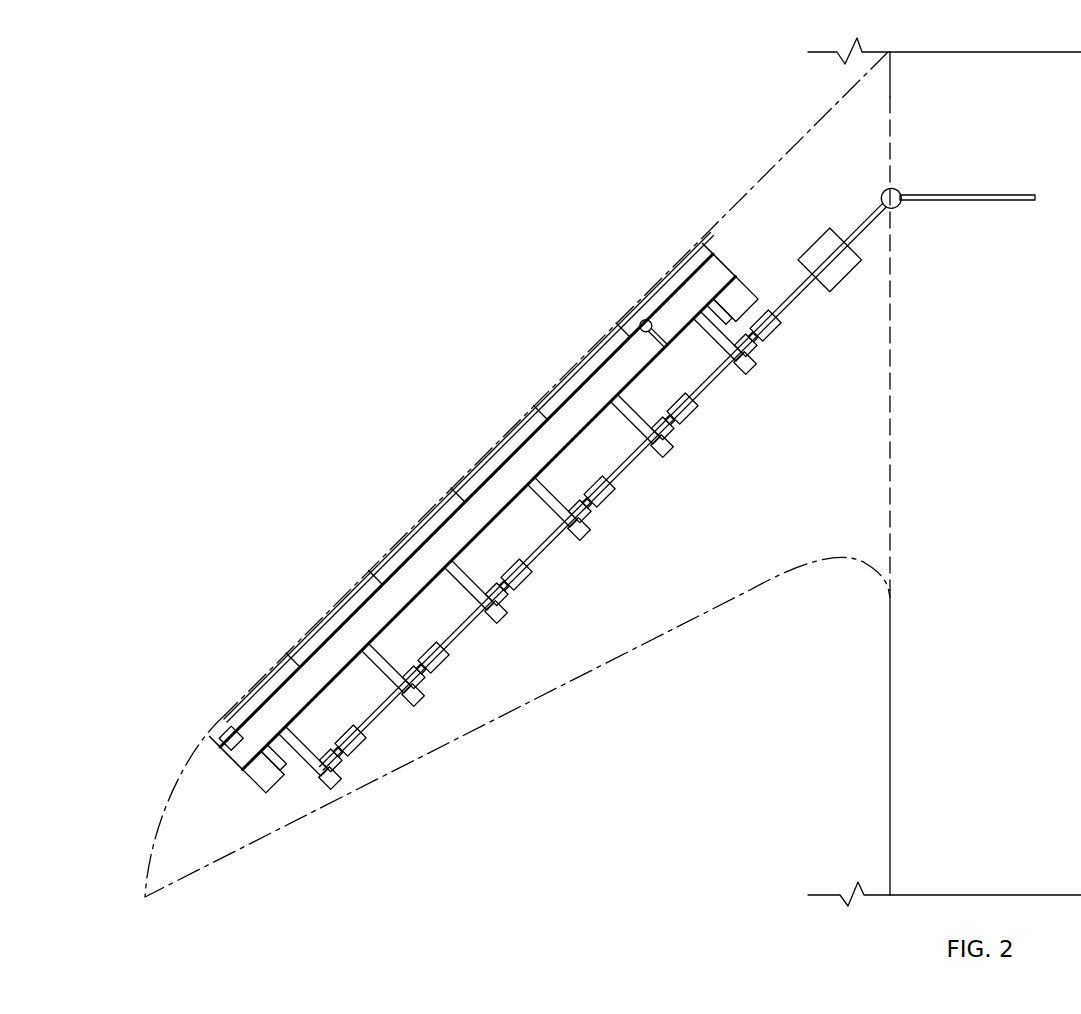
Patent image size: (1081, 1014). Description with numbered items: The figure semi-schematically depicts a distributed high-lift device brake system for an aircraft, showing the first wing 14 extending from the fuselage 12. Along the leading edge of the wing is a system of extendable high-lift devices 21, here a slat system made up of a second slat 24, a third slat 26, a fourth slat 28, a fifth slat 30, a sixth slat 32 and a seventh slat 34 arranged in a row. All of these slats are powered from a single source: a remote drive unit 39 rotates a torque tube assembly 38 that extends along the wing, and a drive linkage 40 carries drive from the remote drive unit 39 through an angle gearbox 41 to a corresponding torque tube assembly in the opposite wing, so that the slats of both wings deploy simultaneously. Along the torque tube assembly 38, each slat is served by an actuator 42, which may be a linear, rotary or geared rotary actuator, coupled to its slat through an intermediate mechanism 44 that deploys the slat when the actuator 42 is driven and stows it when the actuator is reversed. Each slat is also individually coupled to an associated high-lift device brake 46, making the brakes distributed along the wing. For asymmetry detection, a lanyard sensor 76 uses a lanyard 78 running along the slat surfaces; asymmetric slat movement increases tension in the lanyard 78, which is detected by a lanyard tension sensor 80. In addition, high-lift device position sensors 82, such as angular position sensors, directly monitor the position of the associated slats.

The fuselage 12 is at (888, 762).
The first wing 14 is at (793, 164).
The system of extendable high-lift devices 21 is at (408, 421).
The second slat 24 is at (668, 292).
The third slat 26 is at (581, 371).
The fourth slat 28 is at (498, 453).
The fifth slat 30 is at (392, 558).
The sixth slat 32 is at (338, 615).
The seventh slat 34 is at (256, 705).
The torque tube assembly 38 is at (808, 306).
The remote drive unit 39 is at (815, 246).
The drive linkage 40 is at (968, 193).
The angle gearbox 41 is at (896, 188).
The actuator 42 is at (752, 356).
The intermediate mechanism 44 is at (711, 343).
The high-lift device brake 46 is at (774, 336).
The lanyard sensor 76 is at (186, 669).
The lanyard 78 is at (432, 526).
The lanyard tension sensor 80 is at (221, 731).
The high-lift device position sensor 82 is at (752, 288).